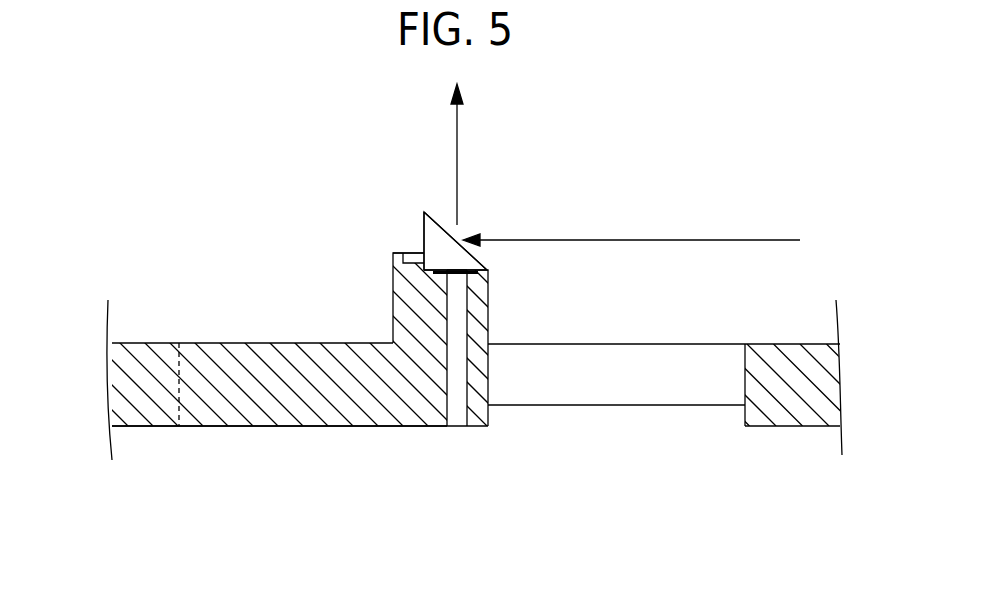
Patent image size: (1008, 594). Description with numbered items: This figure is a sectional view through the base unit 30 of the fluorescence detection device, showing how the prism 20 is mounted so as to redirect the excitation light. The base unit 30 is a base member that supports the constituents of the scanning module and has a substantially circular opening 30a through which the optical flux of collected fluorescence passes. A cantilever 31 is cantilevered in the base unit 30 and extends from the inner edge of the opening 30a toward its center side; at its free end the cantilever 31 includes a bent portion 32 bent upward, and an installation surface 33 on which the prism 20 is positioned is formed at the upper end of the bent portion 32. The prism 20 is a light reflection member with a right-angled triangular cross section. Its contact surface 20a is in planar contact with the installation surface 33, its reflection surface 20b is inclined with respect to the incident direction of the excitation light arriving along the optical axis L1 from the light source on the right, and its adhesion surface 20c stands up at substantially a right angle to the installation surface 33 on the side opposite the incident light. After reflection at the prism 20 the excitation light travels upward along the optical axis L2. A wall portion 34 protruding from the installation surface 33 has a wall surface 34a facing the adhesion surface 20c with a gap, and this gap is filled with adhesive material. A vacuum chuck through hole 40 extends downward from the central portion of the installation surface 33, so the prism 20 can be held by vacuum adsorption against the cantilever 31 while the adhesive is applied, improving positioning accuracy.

The prism 20 is at (420, 203).
The contact surface 20a is at (470, 276).
The reflection surface 20b is at (478, 260).
The adhesion surface 20c is at (423, 238).
The base unit 30 is at (236, 322).
The opening 30a is at (613, 388).
The cantilever 31 is at (282, 395).
The bent portion 32 is at (420, 320).
The installation surface 33 is at (447, 268).
The wall portion 34 is at (396, 258).
The wall surface 34a is at (410, 257).
The vacuum chuck through hole 40 is at (447, 373).
The optical axis of the excitation light L1 is at (635, 240).
The optical axis of the reflected excitation light L2 is at (457, 152).